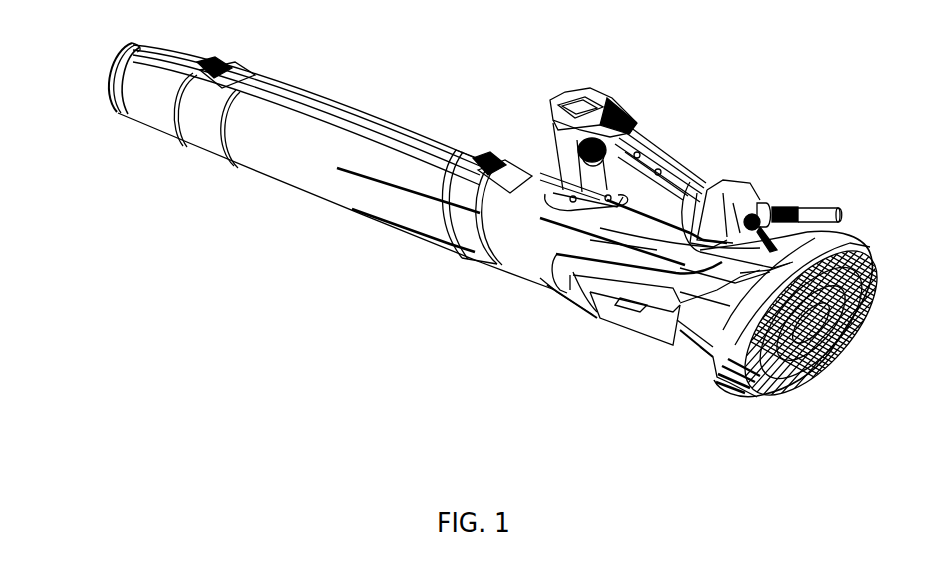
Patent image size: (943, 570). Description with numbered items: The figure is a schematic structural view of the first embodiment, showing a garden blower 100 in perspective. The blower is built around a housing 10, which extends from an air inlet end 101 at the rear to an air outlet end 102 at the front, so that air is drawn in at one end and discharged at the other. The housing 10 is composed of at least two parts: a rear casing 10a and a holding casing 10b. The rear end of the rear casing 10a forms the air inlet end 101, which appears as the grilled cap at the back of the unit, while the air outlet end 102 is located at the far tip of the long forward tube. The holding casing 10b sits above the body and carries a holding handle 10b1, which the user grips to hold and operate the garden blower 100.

The garden blower 100 is at (458, 70).
The air outlet end 102 is at (130, 53).
The housing 10 is at (603, 365).
The rear casing 10a is at (700, 328).
The holding casing 10b is at (553, 288).
The holding handle 10b1 is at (662, 150).
The air inlet end 101 is at (826, 352).